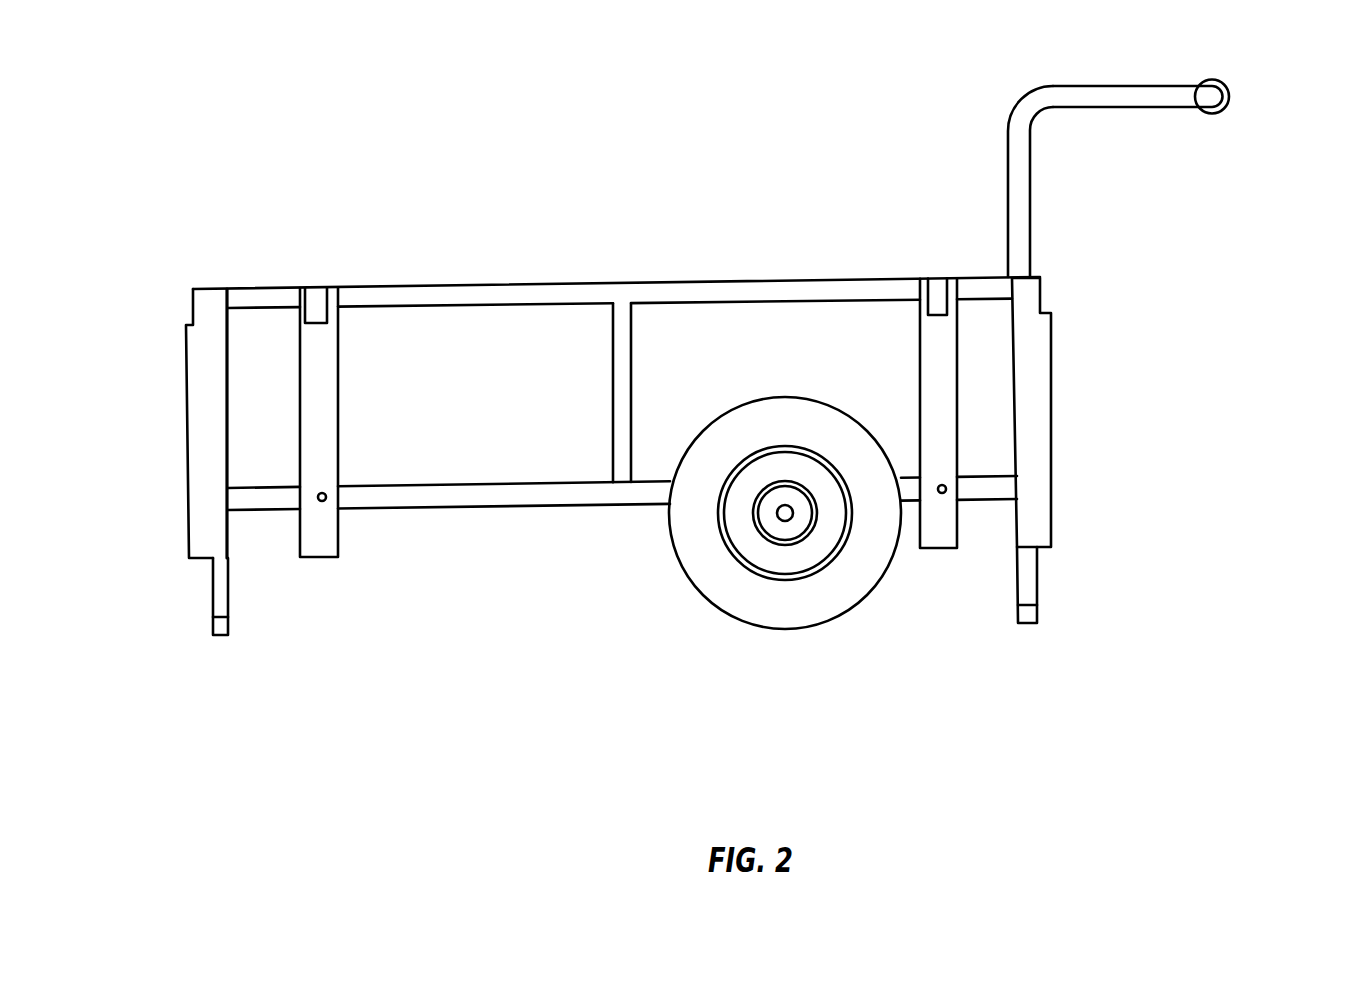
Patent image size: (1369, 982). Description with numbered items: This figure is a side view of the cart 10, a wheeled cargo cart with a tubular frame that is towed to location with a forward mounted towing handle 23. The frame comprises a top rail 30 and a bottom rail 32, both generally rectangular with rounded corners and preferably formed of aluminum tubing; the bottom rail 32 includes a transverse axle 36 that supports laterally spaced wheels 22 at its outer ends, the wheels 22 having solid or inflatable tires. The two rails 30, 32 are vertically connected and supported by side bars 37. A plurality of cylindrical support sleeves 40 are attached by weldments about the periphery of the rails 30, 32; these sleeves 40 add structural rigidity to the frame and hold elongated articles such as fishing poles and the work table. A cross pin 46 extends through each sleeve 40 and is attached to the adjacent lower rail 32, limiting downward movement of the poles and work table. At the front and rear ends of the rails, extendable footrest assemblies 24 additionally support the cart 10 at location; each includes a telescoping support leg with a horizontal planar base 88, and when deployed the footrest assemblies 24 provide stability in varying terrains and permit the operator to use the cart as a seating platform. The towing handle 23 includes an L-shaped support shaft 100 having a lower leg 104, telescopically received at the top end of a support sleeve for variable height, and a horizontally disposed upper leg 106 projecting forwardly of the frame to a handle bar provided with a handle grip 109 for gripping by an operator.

The cart 10 is at (533, 125).
The wheels 22 is at (720, 588).
The towing handle 23 is at (1028, 143).
The footrest assemblies 24 is at (220, 593).
The top rail 30 is at (487, 292).
The bottom rail 32 is at (473, 502).
The transverse axle 36 is at (790, 520).
The side bars 37 is at (617, 393).
The cylindrical support sleeves 40 is at (193, 392).
The cross pin 46 is at (330, 493).
The horizontal planar base 88 is at (223, 623).
The L-shaped support shaft 100 is at (1112, 83).
The lower leg 104 is at (1017, 203).
The upper leg 106 is at (1115, 107).
The handle grip 109 is at (1230, 93).